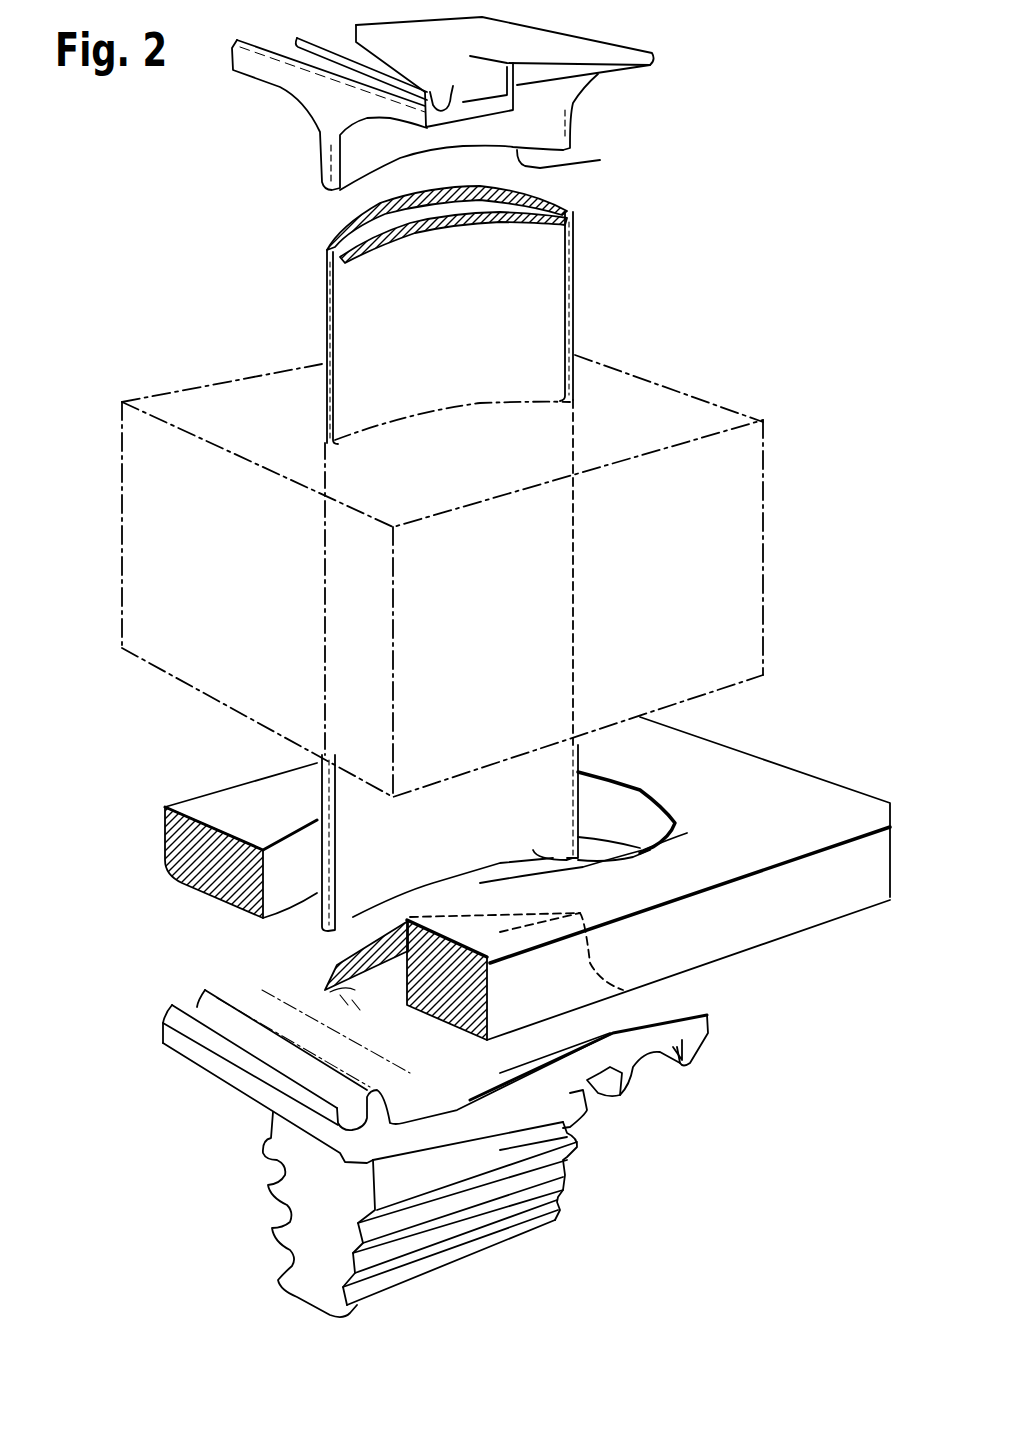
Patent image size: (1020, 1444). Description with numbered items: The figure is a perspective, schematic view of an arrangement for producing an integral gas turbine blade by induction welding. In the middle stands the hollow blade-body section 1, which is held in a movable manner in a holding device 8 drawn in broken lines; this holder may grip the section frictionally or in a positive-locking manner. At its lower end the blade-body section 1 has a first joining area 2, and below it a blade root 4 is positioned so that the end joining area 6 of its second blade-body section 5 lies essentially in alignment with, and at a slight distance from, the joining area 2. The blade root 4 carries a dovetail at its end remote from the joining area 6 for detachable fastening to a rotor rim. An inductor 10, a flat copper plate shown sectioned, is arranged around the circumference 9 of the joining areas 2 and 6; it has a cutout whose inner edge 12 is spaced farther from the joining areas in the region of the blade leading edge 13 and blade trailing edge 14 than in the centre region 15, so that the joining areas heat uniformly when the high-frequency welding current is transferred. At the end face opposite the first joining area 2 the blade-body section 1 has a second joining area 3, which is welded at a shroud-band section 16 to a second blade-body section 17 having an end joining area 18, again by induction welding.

The blade-body section 1 is at (370, 333).
The first joining area 2 is at (388, 908).
The second joining area 3 is at (550, 207).
The blade root 4 is at (612, 1033).
The second blade-body section 5 is at (352, 1002).
The end joining area 6 is at (367, 950).
The holding device 8 is at (765, 433).
The circumference 9 is at (533, 850).
The inductor 10 is at (752, 940).
The inner edge 12 is at (643, 802).
The blade leading edge 13 is at (326, 294).
The blade trailing edge 14 is at (577, 330).
The centre region 15 is at (442, 227).
The shroud-band section 16 is at (285, 92).
The second blade-body section 17 is at (558, 125).
The end joining area 18 is at (540, 167).